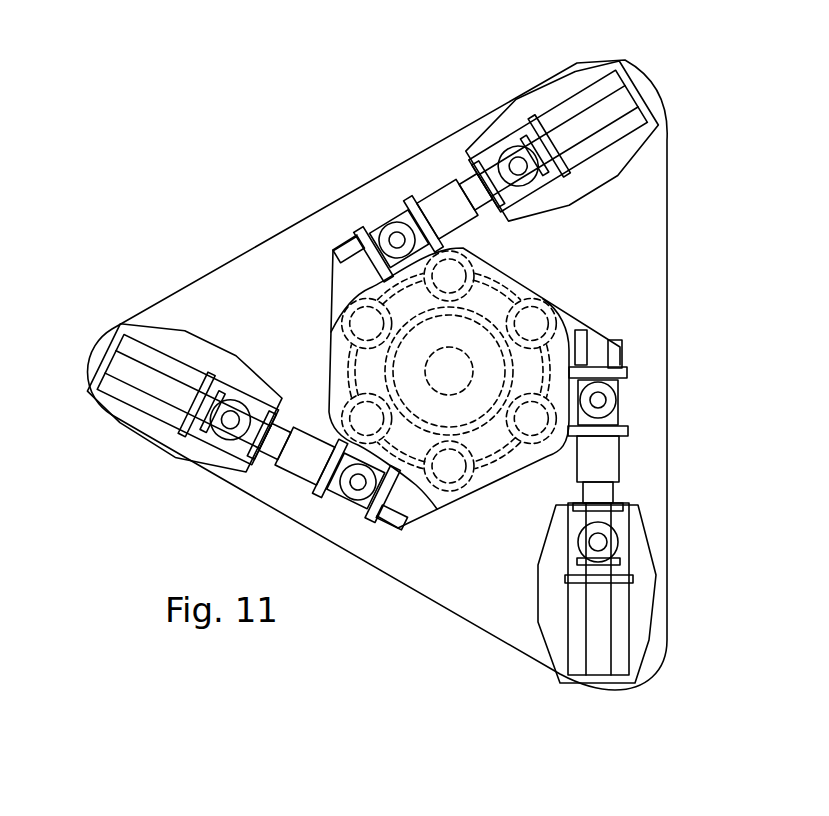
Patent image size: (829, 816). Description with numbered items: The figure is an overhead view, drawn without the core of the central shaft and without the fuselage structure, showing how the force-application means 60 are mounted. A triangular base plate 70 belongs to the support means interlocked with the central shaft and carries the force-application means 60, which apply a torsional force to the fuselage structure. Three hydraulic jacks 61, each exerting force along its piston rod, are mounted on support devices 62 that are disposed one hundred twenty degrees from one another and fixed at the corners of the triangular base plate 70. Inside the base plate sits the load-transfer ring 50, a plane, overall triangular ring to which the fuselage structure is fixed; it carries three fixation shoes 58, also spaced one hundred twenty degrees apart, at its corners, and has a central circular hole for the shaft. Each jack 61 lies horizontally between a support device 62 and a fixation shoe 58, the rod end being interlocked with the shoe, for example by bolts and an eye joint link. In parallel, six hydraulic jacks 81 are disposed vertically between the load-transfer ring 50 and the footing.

The load-transfer ring 50 is at (598, 350).
The fixation shoe 58 is at (380, 222).
The force-application means 60 is at (396, 350).
The hydraulic jack 61 is at (438, 200).
The support device 62 is at (585, 73).
The base plate 70 is at (640, 232).
The hydraulic jack 81 is at (453, 275).